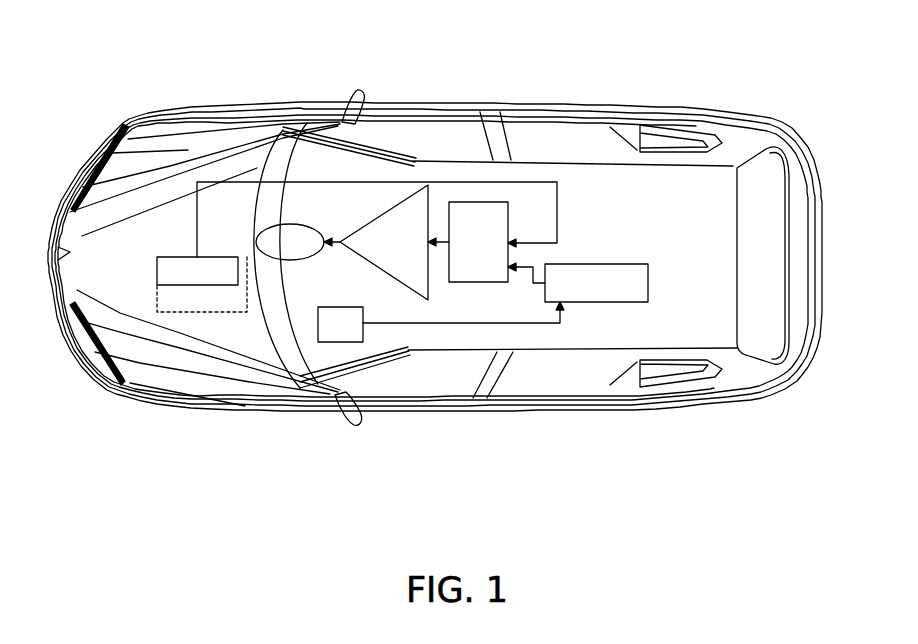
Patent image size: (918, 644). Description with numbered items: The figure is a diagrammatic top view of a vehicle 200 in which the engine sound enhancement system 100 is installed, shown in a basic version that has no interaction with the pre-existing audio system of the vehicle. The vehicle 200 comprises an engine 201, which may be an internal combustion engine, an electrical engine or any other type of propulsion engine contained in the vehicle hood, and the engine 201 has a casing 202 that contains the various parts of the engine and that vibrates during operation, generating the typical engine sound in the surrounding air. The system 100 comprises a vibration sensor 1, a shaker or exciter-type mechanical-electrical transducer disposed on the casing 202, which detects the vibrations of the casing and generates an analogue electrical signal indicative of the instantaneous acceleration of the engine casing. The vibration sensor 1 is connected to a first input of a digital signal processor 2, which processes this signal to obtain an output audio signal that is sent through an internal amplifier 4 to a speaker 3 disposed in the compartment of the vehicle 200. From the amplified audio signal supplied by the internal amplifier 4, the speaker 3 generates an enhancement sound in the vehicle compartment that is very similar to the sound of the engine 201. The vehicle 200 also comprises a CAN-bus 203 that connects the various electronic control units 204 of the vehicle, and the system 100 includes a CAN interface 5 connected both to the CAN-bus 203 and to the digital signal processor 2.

The engine sound enhancement system 100 is at (596, 220).
The vehicle 200 is at (674, 92).
The vibration sensor 1 is at (157, 267).
The engine 201 is at (146, 358).
The casing 202 is at (187, 330).
The speaker 3 is at (216, 300).
The internal amplifier 4 is at (340, 268).
The digital signal processor 2 is at (465, 273).
The CAN interface 5 is at (593, 303).
The CAN-bus 203 is at (530, 325).
The electronic control unit 204 is at (343, 345).